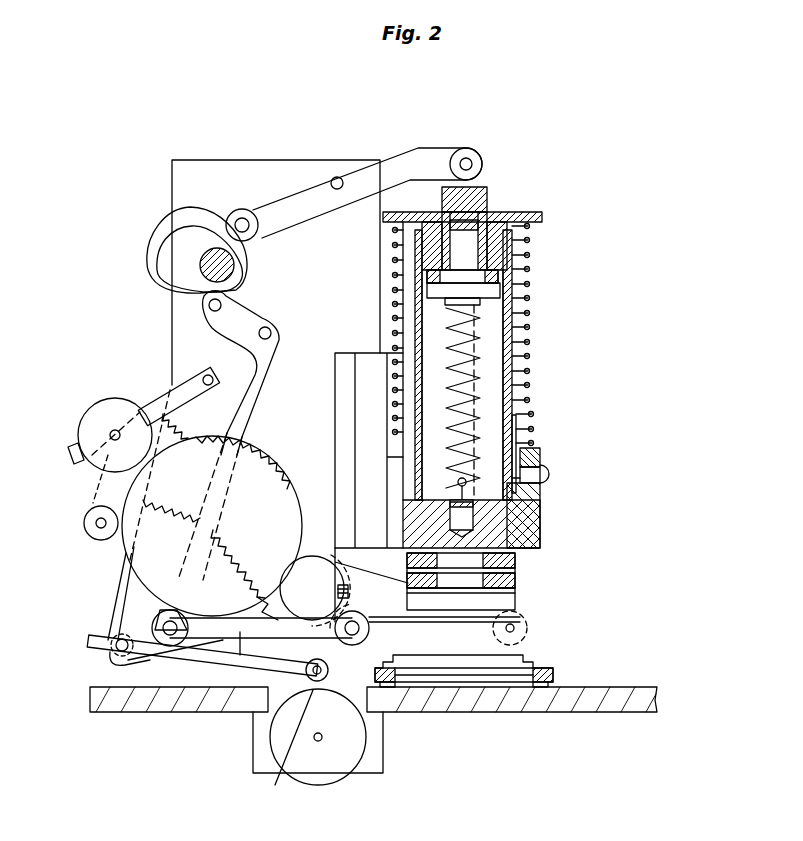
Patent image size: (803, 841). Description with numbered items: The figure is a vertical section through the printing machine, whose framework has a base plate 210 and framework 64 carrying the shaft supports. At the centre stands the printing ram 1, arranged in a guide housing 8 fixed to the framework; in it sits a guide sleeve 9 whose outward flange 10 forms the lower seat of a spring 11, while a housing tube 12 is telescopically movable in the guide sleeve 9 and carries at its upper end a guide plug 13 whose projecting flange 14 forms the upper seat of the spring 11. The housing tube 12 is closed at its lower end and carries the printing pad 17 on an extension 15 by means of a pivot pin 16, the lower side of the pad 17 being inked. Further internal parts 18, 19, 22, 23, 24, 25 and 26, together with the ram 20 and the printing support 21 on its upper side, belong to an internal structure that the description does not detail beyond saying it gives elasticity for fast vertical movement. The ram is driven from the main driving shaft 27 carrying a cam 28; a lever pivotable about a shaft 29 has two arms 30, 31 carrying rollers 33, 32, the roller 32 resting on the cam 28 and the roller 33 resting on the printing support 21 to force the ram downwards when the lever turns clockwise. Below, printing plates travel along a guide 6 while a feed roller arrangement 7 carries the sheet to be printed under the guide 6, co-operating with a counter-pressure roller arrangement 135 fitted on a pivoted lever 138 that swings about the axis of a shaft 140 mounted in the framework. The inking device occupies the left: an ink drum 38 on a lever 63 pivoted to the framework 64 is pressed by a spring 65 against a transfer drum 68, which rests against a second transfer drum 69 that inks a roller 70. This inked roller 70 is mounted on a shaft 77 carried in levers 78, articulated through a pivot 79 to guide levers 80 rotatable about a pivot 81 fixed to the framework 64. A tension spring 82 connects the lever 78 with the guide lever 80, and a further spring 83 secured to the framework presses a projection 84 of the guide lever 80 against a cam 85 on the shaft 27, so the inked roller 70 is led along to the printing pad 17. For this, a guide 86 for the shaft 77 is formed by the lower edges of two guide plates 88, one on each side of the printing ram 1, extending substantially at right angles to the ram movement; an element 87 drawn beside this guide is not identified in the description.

The printing ram 1 is at (492, 364).
The guide 6 is at (565, 672).
The feed roller arrangement 7 is at (313, 775).
The guide housing 8 is at (520, 530).
The guide sleeve 9 is at (518, 440).
The flange 10 is at (537, 455).
The spring 11 is at (517, 425).
The housing tube 12 is at (508, 393).
The guide plug 13 is at (500, 243).
The flange 14 is at (540, 218).
The extension 15 is at (517, 560).
The pivot pin 16 is at (517, 578).
The printing pad 17 is at (517, 592).
The disc 18 is at (500, 280).
The plate 19 is at (502, 293).
The ram 20 is at (480, 331).
The printing support 21 is at (488, 197).
The block 22 is at (478, 498).
The pin 23 is at (475, 517).
The screw 24 is at (485, 482).
The pin 25 is at (478, 484).
The rod 26 is at (510, 357).
The main driving shaft 27 is at (225, 268).
The cam 28 is at (196, 212).
The shaft 29 is at (338, 177).
The arm 30 is at (375, 168).
The arm 31 is at (303, 195).
The roller 32 is at (238, 209).
The roller 33 is at (470, 152).
The ink drum 38 is at (98, 479).
The lever 63 is at (147, 402).
The framework 64 is at (178, 307).
The spring 65 is at (170, 390).
The transfer drum 68 is at (132, 552).
The second transfer drum 69 is at (314, 565).
The inked roller 70 is at (386, 690).
The shaft 77 is at (353, 645).
The lever 78 is at (240, 655).
The pivot 79 is at (180, 648).
The guide lever 80 is at (175, 607).
The pivot 81 is at (272, 330).
The tension spring 82 is at (266, 596).
The spring 83 is at (173, 507).
The projection 84 is at (232, 312).
The cam 85 is at (175, 248).
The guide 86 is at (440, 623).
The roller 87 is at (503, 636).
The guide plates 88 is at (350, 598).
The counter-pressure roller arrangement 135 is at (281, 748).
The pivoted lever 138 is at (216, 658).
The shaft 140 is at (112, 652).
The base plate 210 is at (130, 543).